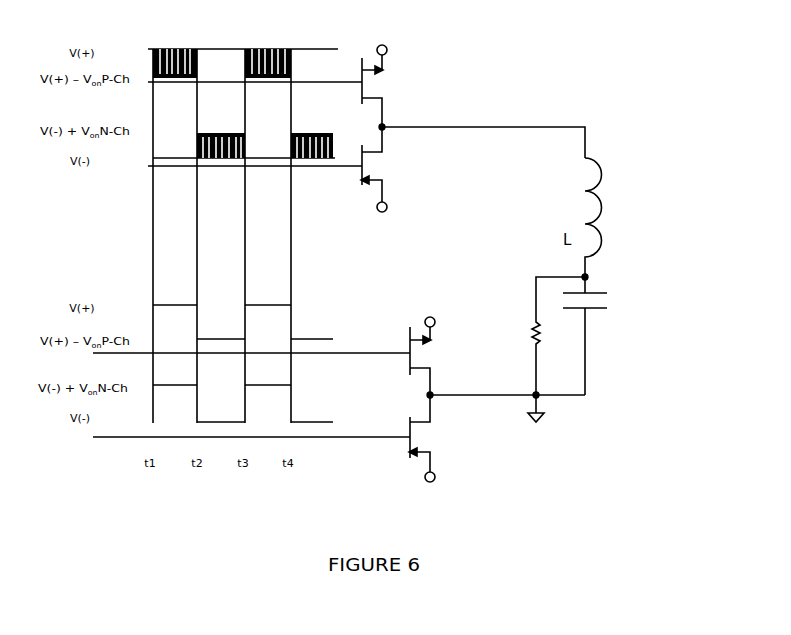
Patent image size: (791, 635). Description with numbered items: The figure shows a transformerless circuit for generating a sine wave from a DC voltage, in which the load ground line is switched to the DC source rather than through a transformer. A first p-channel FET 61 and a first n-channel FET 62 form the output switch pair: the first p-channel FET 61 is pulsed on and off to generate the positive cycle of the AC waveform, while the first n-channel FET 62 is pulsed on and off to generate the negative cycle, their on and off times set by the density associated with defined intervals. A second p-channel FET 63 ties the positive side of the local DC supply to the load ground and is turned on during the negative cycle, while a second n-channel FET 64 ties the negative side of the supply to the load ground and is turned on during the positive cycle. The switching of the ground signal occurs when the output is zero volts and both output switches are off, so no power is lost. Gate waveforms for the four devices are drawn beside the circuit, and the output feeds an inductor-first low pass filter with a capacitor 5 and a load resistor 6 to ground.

The p-channel FET Q1 61 is at (375, 89).
The n-channel FET Q2 62 is at (378, 168).
The p-channel FET Q3 63 is at (425, 349).
The n-channel FET Q4 64 is at (425, 439).
The capacitor C 5 is at (594, 334).
The load resistor R_Load 6 is at (536, 336).